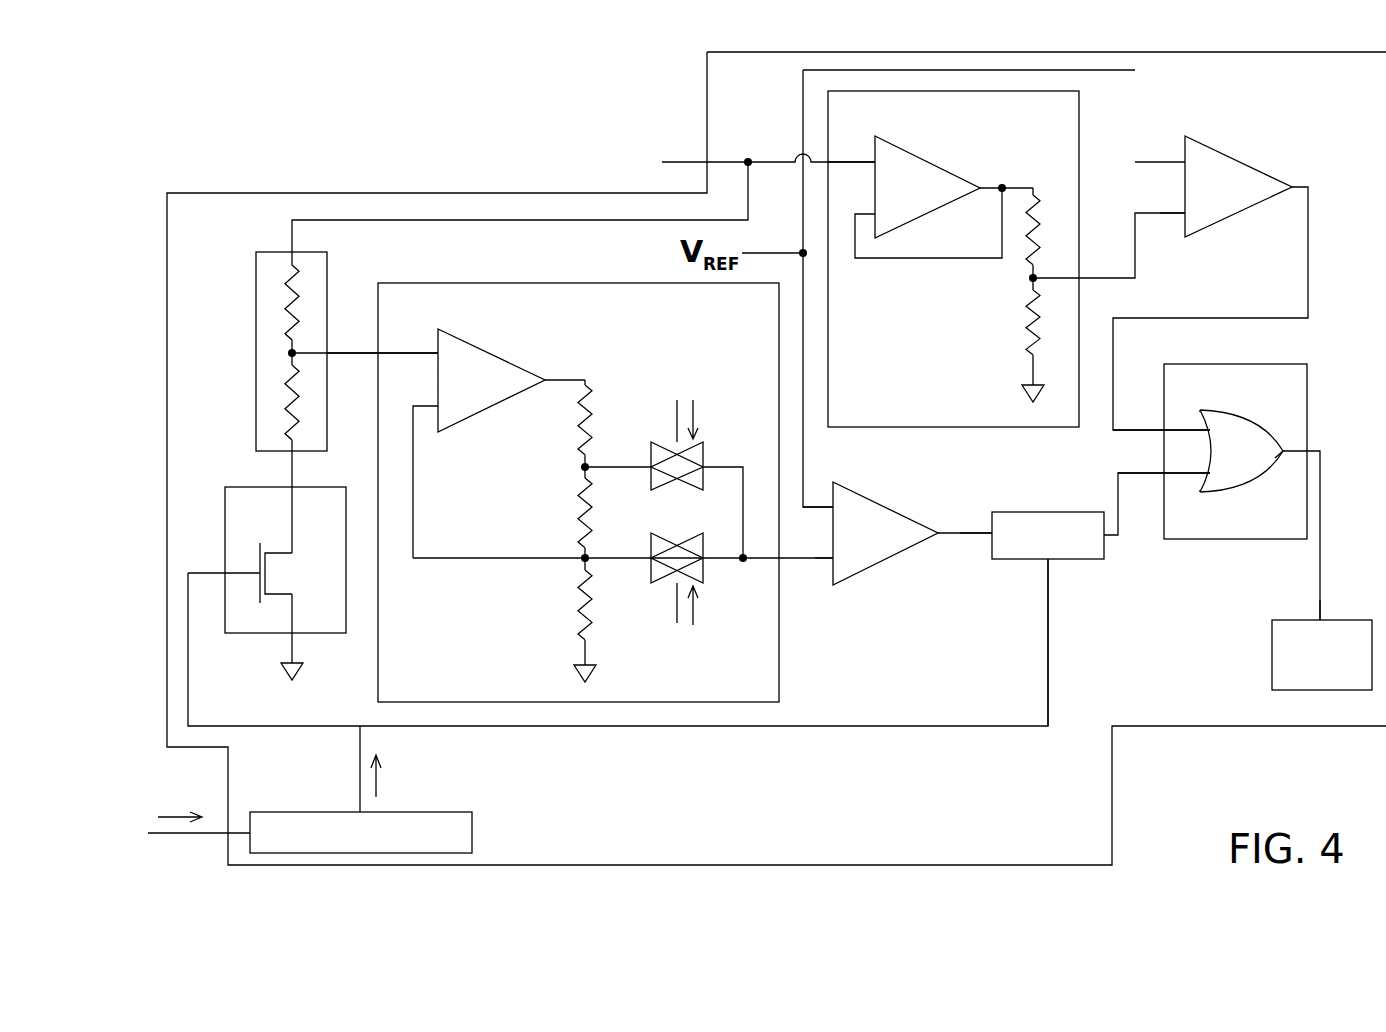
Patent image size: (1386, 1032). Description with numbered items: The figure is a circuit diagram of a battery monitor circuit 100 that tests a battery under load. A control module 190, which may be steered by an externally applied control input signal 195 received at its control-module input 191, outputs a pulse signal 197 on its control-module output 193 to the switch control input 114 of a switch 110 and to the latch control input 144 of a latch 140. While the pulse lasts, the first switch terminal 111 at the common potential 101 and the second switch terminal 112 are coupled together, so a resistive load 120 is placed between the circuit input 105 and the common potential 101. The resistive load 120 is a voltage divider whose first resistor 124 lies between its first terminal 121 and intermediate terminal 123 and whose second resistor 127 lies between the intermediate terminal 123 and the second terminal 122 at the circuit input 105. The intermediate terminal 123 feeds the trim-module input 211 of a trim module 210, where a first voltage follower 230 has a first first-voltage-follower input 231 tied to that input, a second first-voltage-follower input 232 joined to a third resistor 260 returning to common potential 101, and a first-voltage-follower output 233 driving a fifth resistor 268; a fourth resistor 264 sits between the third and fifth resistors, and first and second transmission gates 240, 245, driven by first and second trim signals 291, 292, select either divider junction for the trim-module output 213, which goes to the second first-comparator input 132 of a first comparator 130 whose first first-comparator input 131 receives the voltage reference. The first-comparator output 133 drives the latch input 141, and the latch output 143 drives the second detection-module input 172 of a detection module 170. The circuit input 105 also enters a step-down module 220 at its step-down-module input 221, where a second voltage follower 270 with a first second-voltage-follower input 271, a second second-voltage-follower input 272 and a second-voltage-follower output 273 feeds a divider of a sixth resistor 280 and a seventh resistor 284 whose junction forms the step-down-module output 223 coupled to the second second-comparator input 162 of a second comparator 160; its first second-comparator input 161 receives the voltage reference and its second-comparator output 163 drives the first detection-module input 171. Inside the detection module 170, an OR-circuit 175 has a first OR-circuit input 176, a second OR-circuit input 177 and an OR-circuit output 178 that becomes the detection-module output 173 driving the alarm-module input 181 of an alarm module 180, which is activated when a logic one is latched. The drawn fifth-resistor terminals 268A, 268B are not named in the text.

The battery monitor circuit 100 is at (1202, 726).
The common potential 101 is at (295, 677).
The circuit input 105 is at (706, 160).
The switch 110 is at (261, 565).
The first switch terminal 111 is at (288, 639).
The second switch terminal 112 is at (288, 486).
The switch control input 114 is at (226, 571).
The resistive load 120 is at (327, 270).
The first terminal 121 is at (292, 451).
The second terminal 122 is at (290, 250).
The intermediate terminal 123 is at (328, 353).
The first resistor 124 is at (281, 380).
The second resistor 127 is at (284, 310).
The first comparator 130 is at (860, 496).
The first first-comparator input 131 is at (812, 492).
The second first-comparator input 132 is at (836, 568).
The first-comparator output 133 is at (959, 538).
The latch 140 is at (1038, 510).
The latch input 141 is at (990, 526).
The latch output 143 is at (1114, 542).
The latch control input 144 is at (1055, 562).
The second comparator 160 is at (1220, 154).
The first second-comparator input 161 is at (1177, 154).
The second second-comparator input 162 is at (1181, 218).
The second-comparator output 163 is at (1286, 184).
The detection module 170 is at (1308, 382).
The first detection-module input 171 is at (1148, 428).
The second detection-module input 172 is at (1158, 472).
The detection-module output 173 is at (1320, 450).
The OR-circuit 175 is at (1251, 426).
The first OR-circuit input 176 is at (1203, 410).
The second OR-circuit input 177 is at (1201, 482).
The OR-circuit output 178 is at (1278, 454).
The alarm module 180 is at (1272, 654).
The alarm-module input 181 is at (1324, 612).
The control module 190 is at (472, 828).
The control-module input 191 is at (228, 838).
The control-module output 193 is at (358, 808).
The control input signal 195 is at (172, 814).
The pulse signal 197 is at (378, 774).
The trim module 210 is at (507, 282).
The trim-module input 211 is at (374, 358).
The trim-module output 213 is at (775, 560).
The step-down module 220 is at (920, 428).
The step-down-module input 221 is at (810, 146).
The step-down-module output 223 is at (1081, 276).
The first voltage follower 230 is at (482, 348).
The first first-voltage-follower input 231 is at (431, 349).
The second first-voltage-follower input 232 is at (431, 404).
The first-voltage-follower output 233 is at (554, 376).
The first transmission gate 240 is at (672, 492).
The second transmission gate 245 is at (684, 543).
The third resistor 260 is at (573, 610).
The fourth resistor 264 is at (574, 518).
The fifth resistor 268 is at (582, 420).
The top resistor first terminal 268A is at (586, 386).
The top resistor second terminal 268B is at (582, 462).
The second voltage follower 270 is at (910, 154).
The first second-voltage-follower input 271 is at (836, 146).
The second second-voltage-follower input 272 is at (872, 210).
The second-voltage-follower output 273 is at (976, 184).
The sixth resistor 280 is at (1016, 326).
The seventh resistor 284 is at (1050, 222).
The first trim signal 291 is at (698, 398).
The second trim signal 292 is at (699, 598).